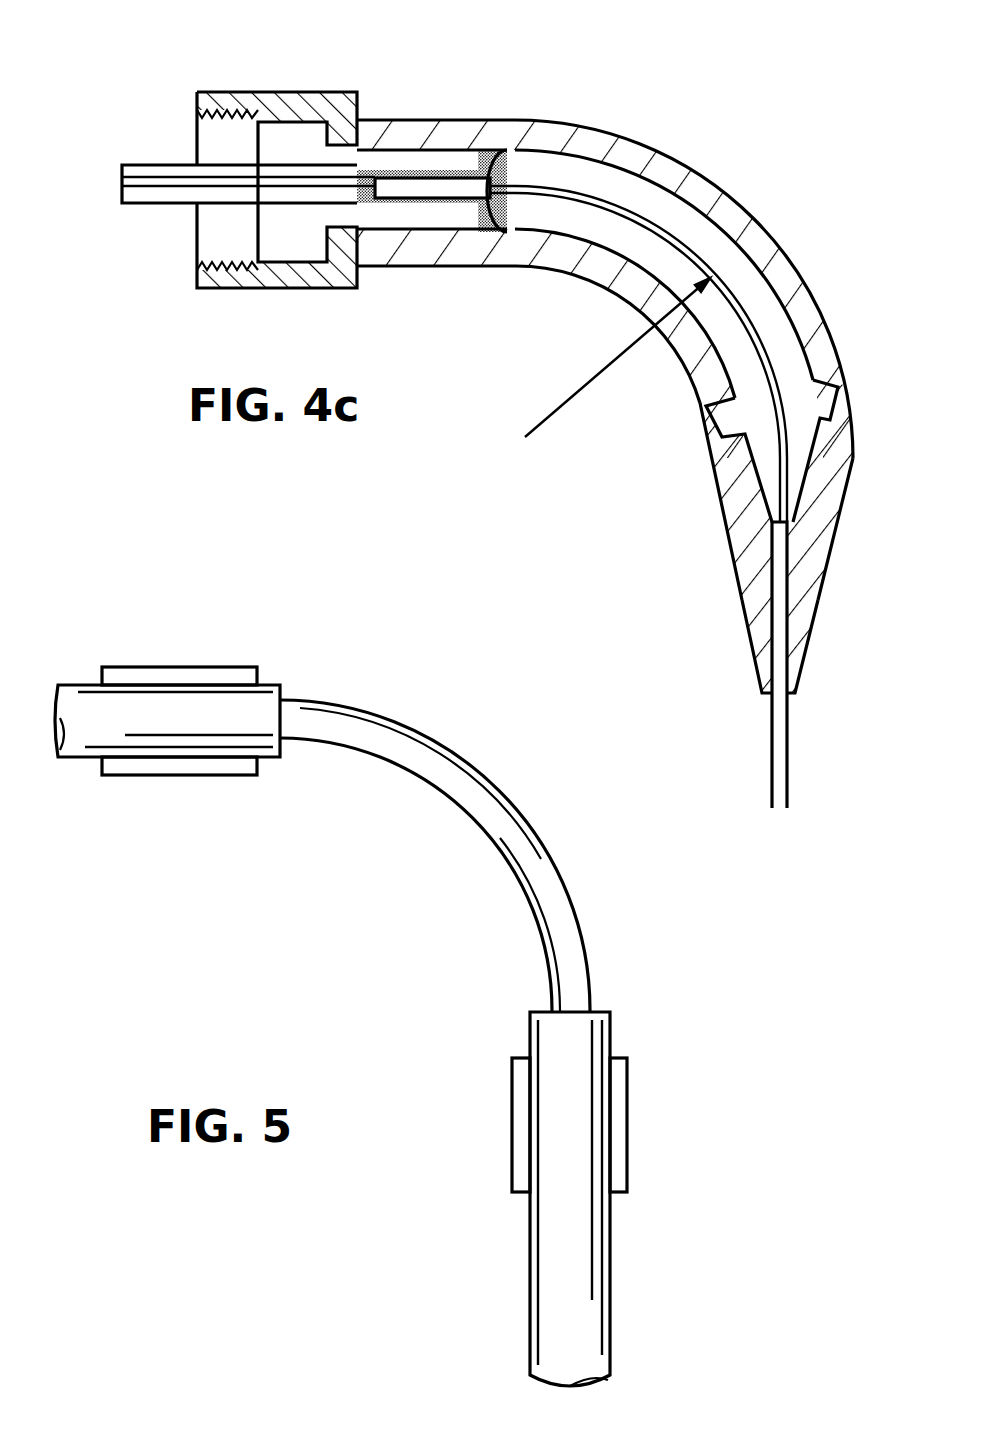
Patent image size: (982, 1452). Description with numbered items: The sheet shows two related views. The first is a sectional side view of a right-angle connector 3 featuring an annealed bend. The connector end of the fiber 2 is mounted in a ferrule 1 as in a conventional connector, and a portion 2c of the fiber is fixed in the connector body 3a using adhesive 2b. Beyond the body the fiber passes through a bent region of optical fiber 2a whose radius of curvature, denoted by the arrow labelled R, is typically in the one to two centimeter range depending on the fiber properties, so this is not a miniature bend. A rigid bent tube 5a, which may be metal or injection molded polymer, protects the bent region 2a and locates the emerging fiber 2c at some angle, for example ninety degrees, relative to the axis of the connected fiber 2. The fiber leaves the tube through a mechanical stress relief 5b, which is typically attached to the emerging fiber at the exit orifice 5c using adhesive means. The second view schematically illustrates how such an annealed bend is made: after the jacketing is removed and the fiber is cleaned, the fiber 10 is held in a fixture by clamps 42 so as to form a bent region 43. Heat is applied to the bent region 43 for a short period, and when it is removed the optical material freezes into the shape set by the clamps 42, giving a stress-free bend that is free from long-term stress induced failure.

In FIG. 4c, the ferrule 1 is at (333, 170).
In FIG. 4c, the fiber 2 is at (185, 183).
In FIG. 4c, the optical fiber bent region 2a is at (642, 217).
In FIG. 4c, the adhesive 2b is at (487, 215).
In FIG. 4c, the fiber portion 2c is at (395, 185).
In FIG. 4c, the connector 3 is at (285, 100).
In FIG. 4c, the connector body 3a is at (418, 150).
In FIG. 4c, the rigid bent tube 5a is at (522, 127).
In FIG. 4c, the mechanical stress relief 5b is at (733, 478).
In FIG. 4c, the exit orifice 5c is at (790, 623).
In FIG. 4c, the radius of curvature R is at (604, 377).
In FIG. 5, the fiber 10 is at (77, 700).
In FIG. 5, the clamps 42 is at (173, 675).
In FIG. 5, the bent region 43 is at (483, 798).